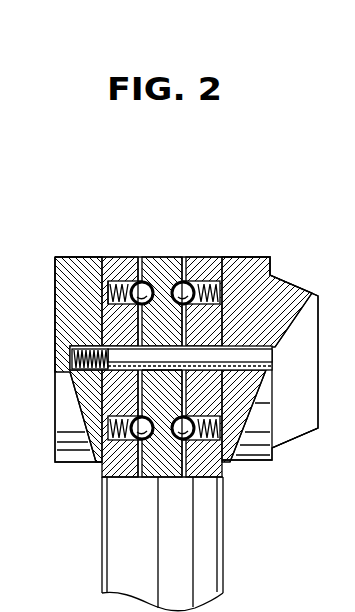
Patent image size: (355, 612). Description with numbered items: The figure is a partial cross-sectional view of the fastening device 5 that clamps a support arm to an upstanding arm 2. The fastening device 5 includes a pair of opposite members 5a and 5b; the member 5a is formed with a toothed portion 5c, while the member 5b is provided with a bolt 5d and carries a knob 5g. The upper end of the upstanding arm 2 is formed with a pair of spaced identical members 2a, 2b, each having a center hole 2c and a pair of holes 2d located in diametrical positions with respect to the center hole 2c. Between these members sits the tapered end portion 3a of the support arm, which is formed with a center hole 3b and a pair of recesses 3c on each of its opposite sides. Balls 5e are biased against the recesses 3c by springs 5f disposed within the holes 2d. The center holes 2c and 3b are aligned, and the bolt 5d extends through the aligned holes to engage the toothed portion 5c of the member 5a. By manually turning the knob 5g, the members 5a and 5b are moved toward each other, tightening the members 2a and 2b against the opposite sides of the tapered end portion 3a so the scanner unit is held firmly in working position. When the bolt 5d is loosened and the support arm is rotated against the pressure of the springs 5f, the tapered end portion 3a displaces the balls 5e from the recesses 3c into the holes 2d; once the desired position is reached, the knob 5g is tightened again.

The upstanding arm 2 is at (223, 572).
The spaced identical member 2a is at (120, 257).
The spaced identical member 2b is at (188, 257).
The center hole 2c is at (186, 340).
The holes 2d is at (115, 300).
The tapered end portion 3a is at (162, 257).
The center hole 3b is at (160, 372).
The recesses 3c is at (180, 436).
The fastening device 5 is at (163, 156).
The member 5a is at (86, 257).
The member 5b is at (272, 272).
The toothed portion 5c is at (74, 372).
The bolt 5d is at (262, 360).
The balls 5e is at (193, 290).
The springs 5f is at (212, 298).
The knob 5g is at (305, 435).